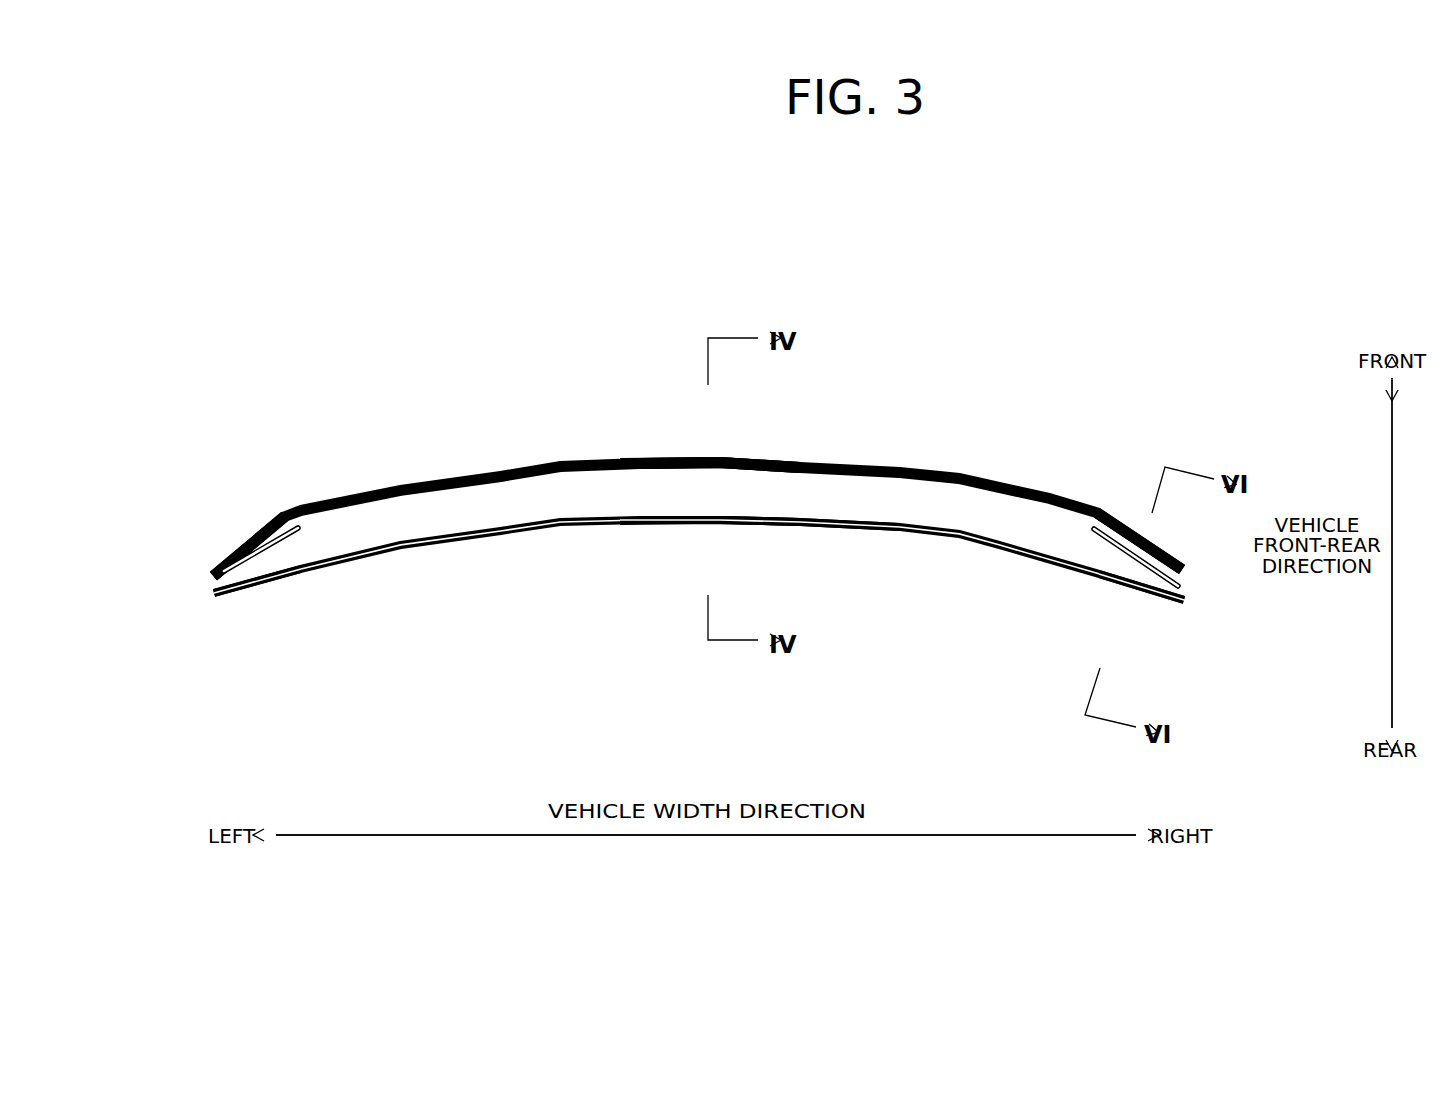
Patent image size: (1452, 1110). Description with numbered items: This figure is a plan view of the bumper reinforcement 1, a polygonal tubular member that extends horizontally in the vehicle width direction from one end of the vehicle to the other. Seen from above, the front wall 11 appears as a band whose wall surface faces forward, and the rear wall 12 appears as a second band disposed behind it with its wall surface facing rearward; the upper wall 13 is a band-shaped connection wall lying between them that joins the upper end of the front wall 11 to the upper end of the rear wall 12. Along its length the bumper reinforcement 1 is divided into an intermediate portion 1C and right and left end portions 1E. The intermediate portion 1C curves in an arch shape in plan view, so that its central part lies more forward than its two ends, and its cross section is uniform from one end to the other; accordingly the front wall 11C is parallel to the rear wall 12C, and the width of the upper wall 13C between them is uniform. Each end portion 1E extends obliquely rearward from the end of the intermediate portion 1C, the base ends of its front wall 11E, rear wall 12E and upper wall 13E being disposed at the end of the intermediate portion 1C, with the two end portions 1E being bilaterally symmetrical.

The bumper reinforcement 1 is at (836, 306).
The intermediate portion 1C is at (653, 368).
The end portion 1E is at (222, 489).
The front wall 11 is at (633, 454).
The front wall 11C is at (755, 457).
The front wall 11E is at (228, 556).
The rear wall 12 is at (745, 524).
The rear wall 12C is at (828, 527).
The rear wall 12E is at (258, 587).
The upper wall 13 is at (806, 486).
The upper wall 13C is at (893, 497).
The upper wall 13E is at (293, 552).